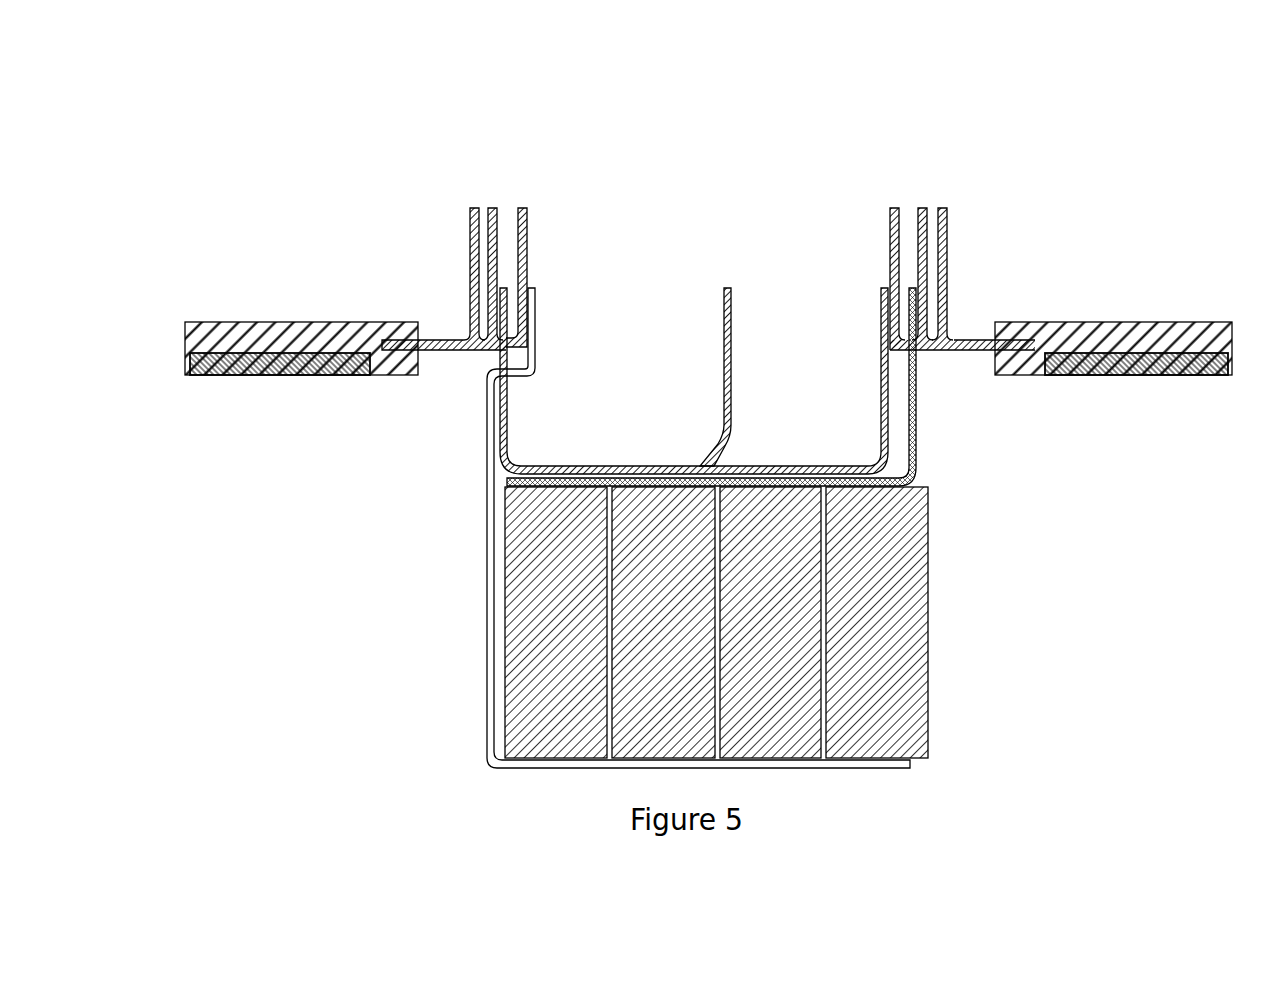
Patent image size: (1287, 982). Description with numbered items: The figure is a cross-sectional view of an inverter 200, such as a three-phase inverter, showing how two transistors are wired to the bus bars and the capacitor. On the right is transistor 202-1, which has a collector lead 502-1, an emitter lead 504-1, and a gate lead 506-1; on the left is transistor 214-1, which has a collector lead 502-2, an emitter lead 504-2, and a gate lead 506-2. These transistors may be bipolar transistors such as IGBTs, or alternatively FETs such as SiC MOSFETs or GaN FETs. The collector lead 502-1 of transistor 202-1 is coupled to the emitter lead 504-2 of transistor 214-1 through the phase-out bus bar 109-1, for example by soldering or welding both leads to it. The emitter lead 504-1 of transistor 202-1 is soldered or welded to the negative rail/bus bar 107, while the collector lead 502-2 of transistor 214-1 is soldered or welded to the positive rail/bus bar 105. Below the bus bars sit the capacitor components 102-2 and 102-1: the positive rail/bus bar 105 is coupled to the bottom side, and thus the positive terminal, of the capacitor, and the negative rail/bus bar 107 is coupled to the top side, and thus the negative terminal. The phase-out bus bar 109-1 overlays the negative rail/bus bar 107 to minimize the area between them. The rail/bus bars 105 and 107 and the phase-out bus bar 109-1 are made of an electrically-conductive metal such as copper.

The three-phase inverter 200 is at (1165, 137).
The transistor 214-1 is at (228, 325).
The transistor 202-1 is at (1165, 322).
The collector lead 502-2 is at (523, 208).
The emitter lead 504-2 is at (493, 208).
The gate lead 506-2 is at (470, 250).
The collector lead 502-1 is at (893, 208).
The emitter lead 504-1 is at (924, 208).
The gate lead 506-1 is at (944, 252).
The phase-out bus bar 109-1 is at (550, 466).
The negative rail/bus bar 107 is at (915, 455).
The positive rail/bus bar 105 is at (490, 662).
The capacitor component 102-2 is at (530, 712).
The capacitor component 102-1 is at (917, 692).